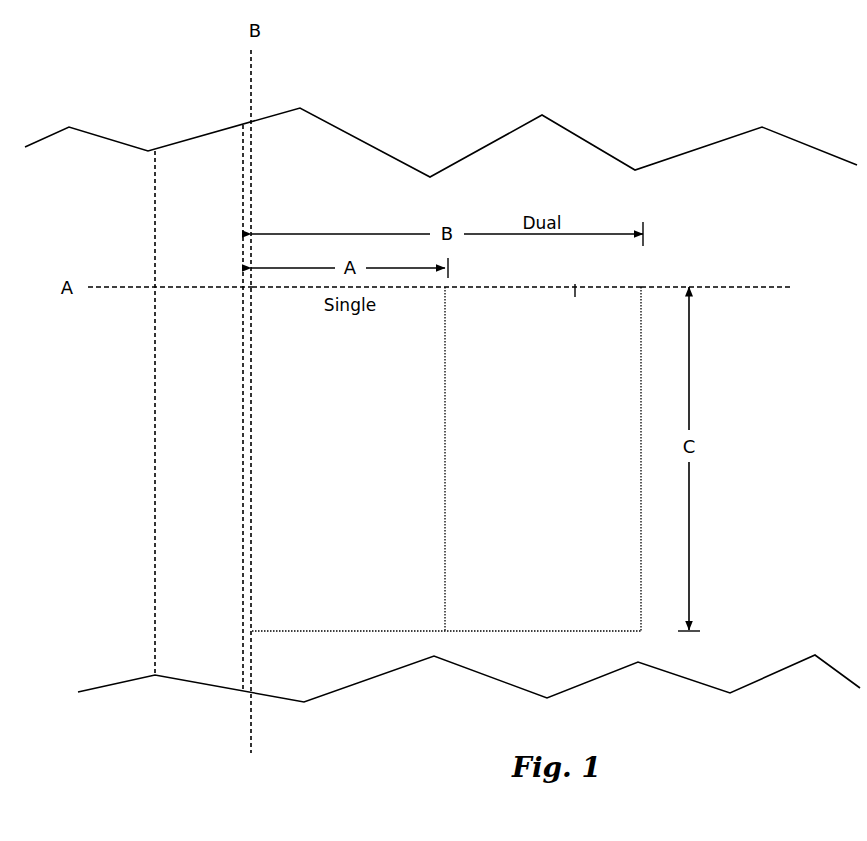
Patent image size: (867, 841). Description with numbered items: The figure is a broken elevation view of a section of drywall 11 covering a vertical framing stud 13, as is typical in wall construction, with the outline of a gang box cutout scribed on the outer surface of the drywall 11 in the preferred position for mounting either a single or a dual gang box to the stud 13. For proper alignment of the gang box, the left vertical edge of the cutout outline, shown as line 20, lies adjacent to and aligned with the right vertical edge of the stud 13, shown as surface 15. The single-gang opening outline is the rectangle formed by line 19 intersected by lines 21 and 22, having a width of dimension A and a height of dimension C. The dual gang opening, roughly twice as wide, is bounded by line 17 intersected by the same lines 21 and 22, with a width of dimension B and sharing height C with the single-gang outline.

The drywall 11 is at (577, 170).
The stud 13 is at (193, 147).
The surface 15 is at (243, 198).
The line 17 is at (639, 592).
The line 19 is at (447, 488).
The line 20 is at (252, 470).
The line 21 is at (314, 631).
The line 22 is at (577, 287).